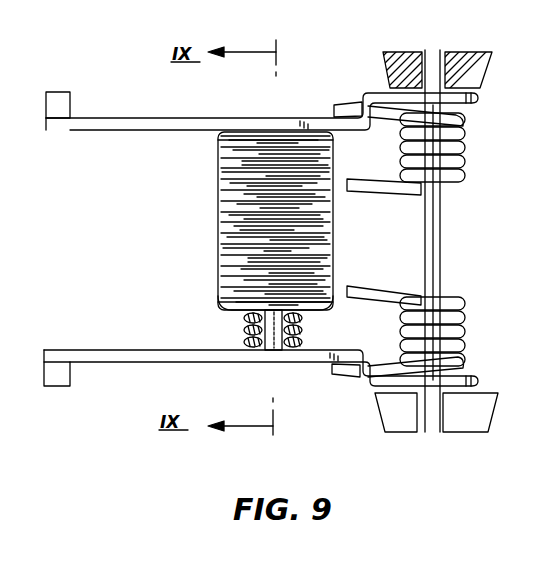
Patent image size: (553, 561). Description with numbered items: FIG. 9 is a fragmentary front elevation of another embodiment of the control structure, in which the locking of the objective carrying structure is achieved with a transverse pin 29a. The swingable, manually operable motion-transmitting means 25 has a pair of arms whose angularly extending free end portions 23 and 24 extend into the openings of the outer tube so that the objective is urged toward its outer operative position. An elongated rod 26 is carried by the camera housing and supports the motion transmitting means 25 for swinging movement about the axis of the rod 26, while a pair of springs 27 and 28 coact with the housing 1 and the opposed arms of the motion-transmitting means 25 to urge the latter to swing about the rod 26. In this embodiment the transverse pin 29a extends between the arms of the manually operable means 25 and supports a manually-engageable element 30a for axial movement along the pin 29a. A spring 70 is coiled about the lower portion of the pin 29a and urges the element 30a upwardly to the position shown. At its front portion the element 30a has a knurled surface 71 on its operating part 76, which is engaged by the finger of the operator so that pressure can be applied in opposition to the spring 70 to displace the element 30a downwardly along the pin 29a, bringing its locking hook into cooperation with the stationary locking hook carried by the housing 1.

The housing 1 is at (478, 72).
The free end portion 23 is at (53, 372).
The free end portion 24 is at (57, 108).
The manually operable motion-transmitting means 25 is at (118, 127).
The elongated rod 26 is at (432, 254).
The spring 27 is at (465, 333).
The spring 28 is at (465, 160).
The transverse pin 29a is at (275, 322).
The manually-engageable element 30a is at (237, 192).
The spring 70 is at (245, 333).
The knurled surface 71 is at (220, 230).
The operating part 76 is at (226, 284).